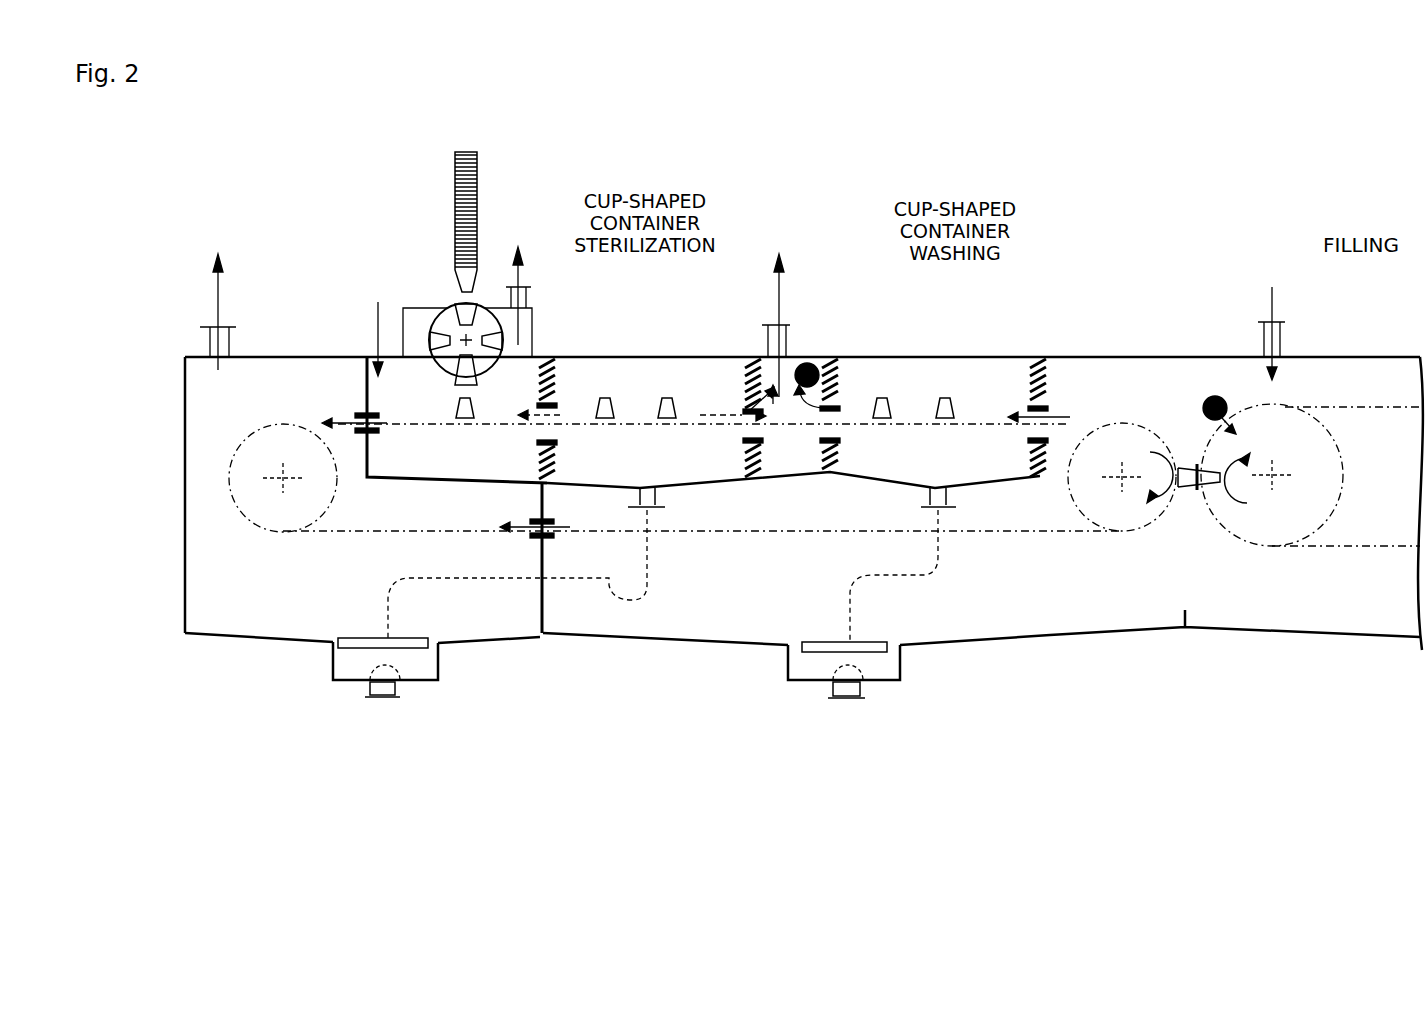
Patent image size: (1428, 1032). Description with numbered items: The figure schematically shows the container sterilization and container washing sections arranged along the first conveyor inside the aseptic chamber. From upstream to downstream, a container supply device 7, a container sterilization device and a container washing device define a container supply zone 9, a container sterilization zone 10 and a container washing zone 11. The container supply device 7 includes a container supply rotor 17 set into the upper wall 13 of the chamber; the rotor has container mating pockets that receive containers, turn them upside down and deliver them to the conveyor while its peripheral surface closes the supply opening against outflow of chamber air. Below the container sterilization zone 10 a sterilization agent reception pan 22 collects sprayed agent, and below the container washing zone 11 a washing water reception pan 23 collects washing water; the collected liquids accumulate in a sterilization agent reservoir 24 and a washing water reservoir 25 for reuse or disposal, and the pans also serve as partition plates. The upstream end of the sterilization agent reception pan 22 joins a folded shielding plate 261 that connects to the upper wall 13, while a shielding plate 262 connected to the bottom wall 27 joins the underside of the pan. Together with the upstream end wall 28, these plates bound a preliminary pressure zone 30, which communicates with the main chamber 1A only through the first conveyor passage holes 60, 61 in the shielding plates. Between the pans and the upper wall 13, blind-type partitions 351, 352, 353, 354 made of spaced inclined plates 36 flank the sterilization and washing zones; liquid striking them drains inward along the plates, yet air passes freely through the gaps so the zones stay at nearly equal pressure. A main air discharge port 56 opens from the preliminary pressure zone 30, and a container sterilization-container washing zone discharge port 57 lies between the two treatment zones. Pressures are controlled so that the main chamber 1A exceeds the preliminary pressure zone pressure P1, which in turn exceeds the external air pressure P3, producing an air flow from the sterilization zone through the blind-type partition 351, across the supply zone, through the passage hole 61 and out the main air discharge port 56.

The container supply device 7 is at (430, 322).
The container supply rotor 17 is at (448, 313).
The upper wall 13 is at (283, 357).
The upstream end wall 28 is at (184, 441).
The bottom wall 27 is at (235, 643).
The main air discharge port 56 is at (207, 339).
The external air pressure P3 is at (220, 260).
The shielding plate 261 is at (440, 480).
The shielding plate 262 is at (540, 605).
The first conveyor passage hole 61 is at (352, 412).
The first conveyor passage hole 60 is at (556, 530).
The blind-type partition 351 is at (548, 357).
The blind-type partition 352 is at (750, 360).
The blind-type partition 353 is at (832, 357).
The blind-type partition 354 is at (1035, 357).
The inclined plate 36 is at (553, 466).
The container sterilization-container washing zone discharge port 57 is at (792, 335).
The container supply zone 9 is at (468, 461).
The container sterilization zone 10 is at (658, 461).
The container washing zone 11 is at (930, 461).
The preliminary pressure zone 30 is at (336, 598).
The air pressure of the preliminary pressure zone P1 is at (267, 579).
The sterilization agent reception pan 22 is at (703, 484).
The washing water reception pan 23 is at (890, 483).
The sterilization agent reservoir 24 is at (345, 670).
The washing water reservoir 25 is at (885, 676).
The main chamber 1A is at (986, 592).